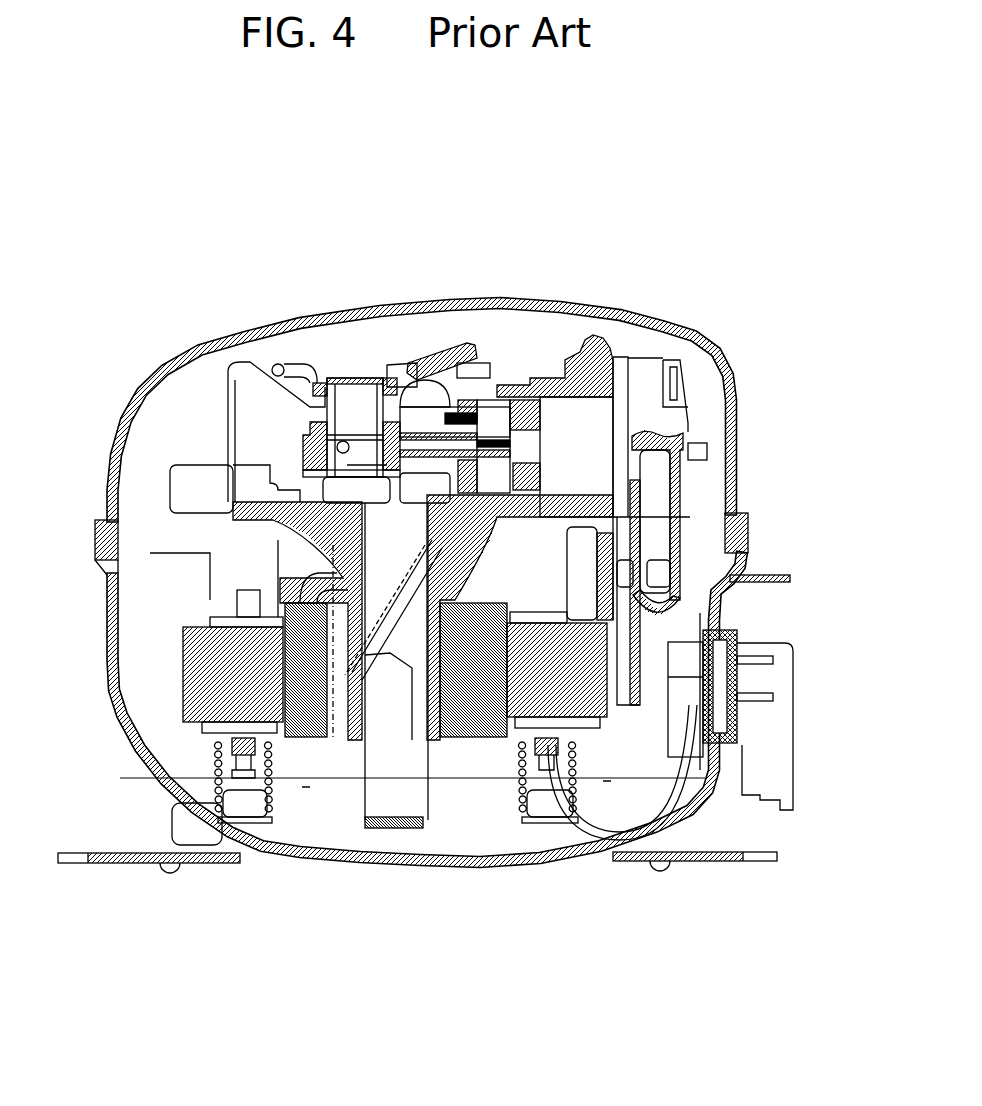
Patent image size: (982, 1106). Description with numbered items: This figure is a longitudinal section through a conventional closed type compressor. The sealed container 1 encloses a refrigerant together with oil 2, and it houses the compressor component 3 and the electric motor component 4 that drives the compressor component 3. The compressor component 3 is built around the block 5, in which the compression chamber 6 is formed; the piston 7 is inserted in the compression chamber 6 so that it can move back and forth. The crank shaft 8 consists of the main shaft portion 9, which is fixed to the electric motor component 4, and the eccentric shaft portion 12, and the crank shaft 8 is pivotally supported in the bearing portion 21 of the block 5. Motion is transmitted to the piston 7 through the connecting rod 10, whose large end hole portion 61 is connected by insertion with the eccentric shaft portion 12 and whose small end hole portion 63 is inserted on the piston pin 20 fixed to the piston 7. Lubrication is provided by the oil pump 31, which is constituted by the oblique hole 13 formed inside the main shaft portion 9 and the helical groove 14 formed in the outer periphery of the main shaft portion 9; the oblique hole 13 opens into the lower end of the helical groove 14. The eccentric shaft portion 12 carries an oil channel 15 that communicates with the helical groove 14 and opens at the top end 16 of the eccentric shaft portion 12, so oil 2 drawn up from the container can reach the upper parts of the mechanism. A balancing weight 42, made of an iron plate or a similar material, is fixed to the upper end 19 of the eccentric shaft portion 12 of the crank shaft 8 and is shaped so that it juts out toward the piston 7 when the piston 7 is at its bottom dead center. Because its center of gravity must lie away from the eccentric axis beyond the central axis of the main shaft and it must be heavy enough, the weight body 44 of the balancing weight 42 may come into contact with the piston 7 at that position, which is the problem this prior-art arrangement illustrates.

The sealed container 1 is at (250, 325).
The oil 2 is at (307, 833).
The compressor component 3 is at (662, 359).
The electric motor component 4 is at (283, 665).
The block 5 is at (613, 385).
The compression chamber 6 is at (577, 468).
The piston 7 is at (517, 480).
The crank shaft 8 is at (340, 490).
The main shaft portion 9 is at (703, 740).
The connecting rod 10 is at (497, 413).
The eccentric shaft portion 12 is at (350, 412).
The oblique hole 13 is at (398, 748).
The helical groove 14 is at (277, 611).
The oil channel 15 is at (363, 464).
The top end 16 is at (352, 420).
The upper end 19 is at (310, 390).
The piston pin 20 is at (558, 413).
The bearing portion 21 is at (297, 528).
The oil pump 31 is at (385, 687).
The balancing weight 42 is at (410, 370).
The weight body 44 is at (463, 372).
The large end hole portion 61 is at (310, 436).
The small end hole portion 63 is at (598, 418).